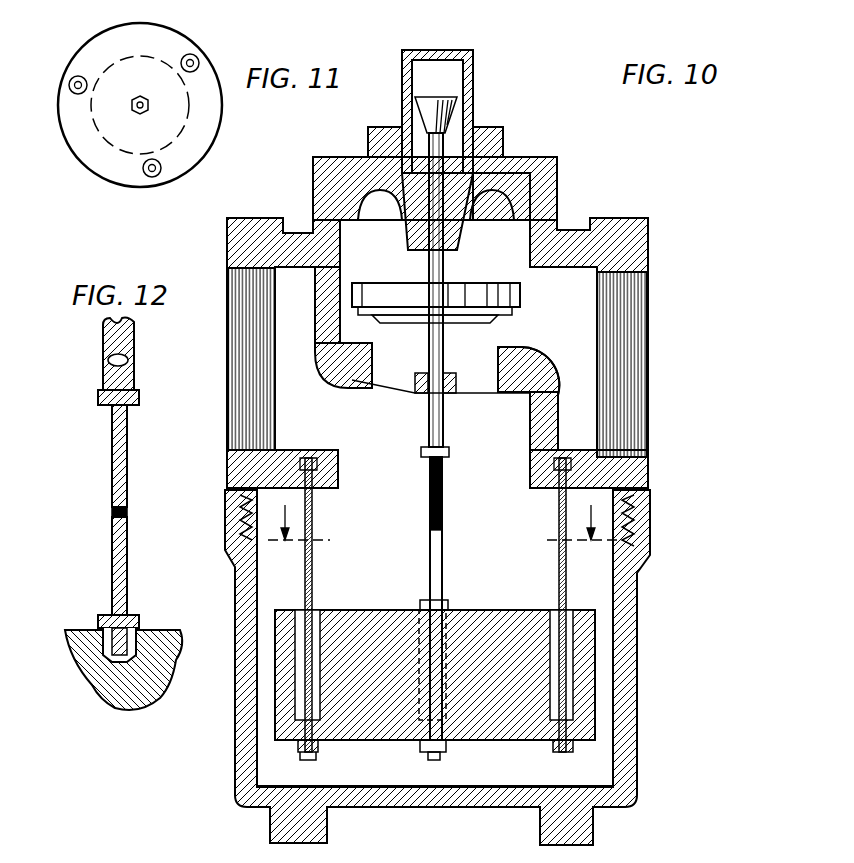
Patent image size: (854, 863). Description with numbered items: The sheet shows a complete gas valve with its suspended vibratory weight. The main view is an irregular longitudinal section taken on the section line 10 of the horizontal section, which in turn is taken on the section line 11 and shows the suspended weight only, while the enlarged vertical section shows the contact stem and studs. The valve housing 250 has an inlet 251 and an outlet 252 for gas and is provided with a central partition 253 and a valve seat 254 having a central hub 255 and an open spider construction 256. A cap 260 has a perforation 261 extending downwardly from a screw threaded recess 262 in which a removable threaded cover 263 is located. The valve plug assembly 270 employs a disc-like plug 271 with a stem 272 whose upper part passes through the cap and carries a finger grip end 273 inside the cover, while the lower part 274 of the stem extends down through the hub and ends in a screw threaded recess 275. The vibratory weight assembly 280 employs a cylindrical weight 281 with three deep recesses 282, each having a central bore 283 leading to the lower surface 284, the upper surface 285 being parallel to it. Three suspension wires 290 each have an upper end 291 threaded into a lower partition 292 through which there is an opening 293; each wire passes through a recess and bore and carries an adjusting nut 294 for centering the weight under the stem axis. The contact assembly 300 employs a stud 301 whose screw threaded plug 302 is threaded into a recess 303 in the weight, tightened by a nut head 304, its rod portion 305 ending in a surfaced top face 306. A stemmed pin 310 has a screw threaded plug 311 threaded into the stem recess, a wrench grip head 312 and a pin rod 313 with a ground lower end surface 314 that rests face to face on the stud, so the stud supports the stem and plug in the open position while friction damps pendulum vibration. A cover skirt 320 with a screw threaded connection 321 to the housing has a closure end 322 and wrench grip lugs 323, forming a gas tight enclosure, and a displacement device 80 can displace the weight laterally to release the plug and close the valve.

In FIG. 11, the section line 10— 10 is at (167, 243).
In FIG. 10, the section line 11— 11 is at (444, 522).
In FIG. 10, the displacement device 80 is at (400, 862).
In FIG. 10, the valve housing 250 is at (590, 200).
In FIG. 10, the inlet 251 is at (662, 322).
In FIG. 10, the outlet 252 is at (240, 378).
In FIG. 10, the central partition 253 is at (326, 336).
In FIG. 10, the valve seat 254 is at (522, 350).
In FIG. 10, the central hub 255 is at (415, 392).
In FIG. 10, the open spider construction 256 is at (470, 395).
In FIG. 10, the cap 260 is at (506, 122).
In FIG. 10, the perforation 261 is at (462, 242).
In FIG. 10, the screw threaded recess 262 is at (478, 172).
In FIG. 10, the removable threaded cover 263 is at (473, 60).
In FIG. 10, the valve plug assembly 270 is at (400, 282).
In FIG. 10, the disc-like plug 271 is at (400, 300).
In FIG. 10, the stem 272 is at (460, 270).
In FIG. 10, the finger grip end 273 is at (456, 100).
In FIG. 10, the lower part of the stem 274 is at (470, 323).
In FIG. 10, the screw threaded recess 275 is at (426, 440).
In FIG. 10, the vibratory weight assembly 280 is at (595, 590).
In FIG. 10, the cylindrical weight 281 is at (470, 645).
In FIG. 10, the deep recesses 282 is at (320, 622).
In FIG. 10, the central bore 283 is at (320, 738).
In FIG. 10, the lower surface 284 is at (380, 748).
In FIG. 10, the upper surface 285 is at (380, 610).
In FIG. 10, the suspension wires 290 is at (318, 562).
In FIG. 10, the upper end 291 is at (315, 460).
In FIG. 10, the lower partition 292 is at (322, 468).
In FIG. 10, the opening 293 is at (494, 470).
In FIG. 10, the adjusting nut 294 is at (318, 748).
In FIG. 12, the contact assembly 300 is at (102, 522).
In FIG. 10, the stud 301 is at (441, 562).
In FIG. 12, the stud 301 is at (105, 563).
In FIG. 12, the screw threaded plug 302 is at (136, 642).
In FIG. 12, the recess 303 is at (110, 660).
In FIG. 12, the nut head 304 is at (130, 614).
In FIG. 12, the rod portion 305 is at (121, 556).
In FIG. 12, the surfaced top face 306 is at (126, 516).
In FIG. 12, the stemmed pin 310 is at (108, 432).
In FIG. 12, the screw threaded plug 311 is at (110, 378).
In FIG. 12, the wrench grip head 312 is at (138, 400).
In FIG. 10, the pin rod 313 is at (440, 468).
In FIG. 12, the pin rod 313 is at (126, 470).
In FIG. 12, the lower end surface 314 is at (124, 504).
In FIG. 10, the cover skirt 320 is at (237, 660).
In FIG. 10, the screw threaded connection 321 is at (650, 518).
In FIG. 10, the closure end 322 is at (433, 788).
In FIG. 10, the wrench grip lugs 323 is at (286, 815).